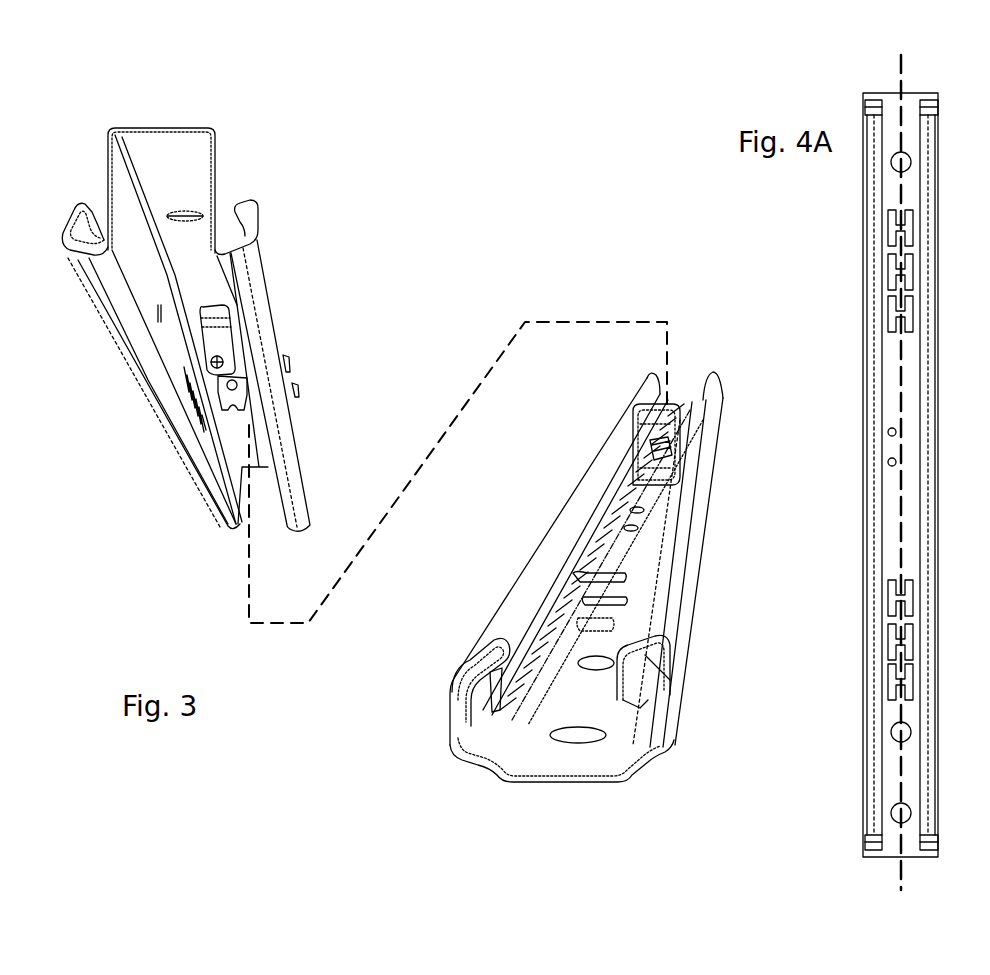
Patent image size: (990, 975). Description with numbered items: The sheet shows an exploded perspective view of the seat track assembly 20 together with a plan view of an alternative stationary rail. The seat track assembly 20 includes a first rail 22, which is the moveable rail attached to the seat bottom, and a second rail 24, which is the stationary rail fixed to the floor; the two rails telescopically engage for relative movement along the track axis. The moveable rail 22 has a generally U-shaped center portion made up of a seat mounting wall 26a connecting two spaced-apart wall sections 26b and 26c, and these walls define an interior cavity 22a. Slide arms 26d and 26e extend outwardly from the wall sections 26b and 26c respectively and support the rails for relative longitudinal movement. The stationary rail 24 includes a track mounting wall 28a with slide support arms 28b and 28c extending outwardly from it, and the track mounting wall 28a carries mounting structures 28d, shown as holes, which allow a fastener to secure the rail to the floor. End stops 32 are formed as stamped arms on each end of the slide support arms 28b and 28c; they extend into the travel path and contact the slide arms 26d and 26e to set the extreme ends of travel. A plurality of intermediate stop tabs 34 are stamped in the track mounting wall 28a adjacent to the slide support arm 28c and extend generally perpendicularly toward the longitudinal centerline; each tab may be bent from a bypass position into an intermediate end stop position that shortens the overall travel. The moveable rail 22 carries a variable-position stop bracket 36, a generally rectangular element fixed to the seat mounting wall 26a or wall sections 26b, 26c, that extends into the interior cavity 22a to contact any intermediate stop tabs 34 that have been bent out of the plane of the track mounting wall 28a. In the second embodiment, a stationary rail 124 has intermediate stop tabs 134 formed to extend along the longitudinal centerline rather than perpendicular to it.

In FIG. 3, the seat track assembly 20 is at (521, 264).
In FIG. 3, the first rail 22 is at (208, 311).
In FIG. 3, the interior cavity 22a is at (177, 342).
In FIG. 3, the second rail 24 is at (566, 572).
In FIG. 3, the seat mounting wall 26a is at (151, 127).
In FIG. 3, the wall section 26b is at (218, 200).
In FIG. 3, the wall section 26c is at (112, 197).
In FIG. 3, the slide arm 26d is at (263, 278).
In FIG. 3, the slide arm 26e is at (108, 323).
In FIG. 3, the track mounting wall 28a is at (537, 760).
In FIG. 3, the slide support arm 28b is at (658, 542).
In FIG. 3, the slide support arm 28c is at (540, 548).
In FIG. 3, the mounting structure 28d is at (584, 735).
In FIG. 3, the end stop 32 is at (653, 372).
In FIG. 3, the intermediate stop tab 34 is at (665, 455).
In FIG. 3, the variable-position stop bracket 36 is at (680, 434).
In FIG. 4A, the stationary rail 124 is at (851, 217).
In FIG. 4A, the intermediate stop tab 134 is at (895, 265).